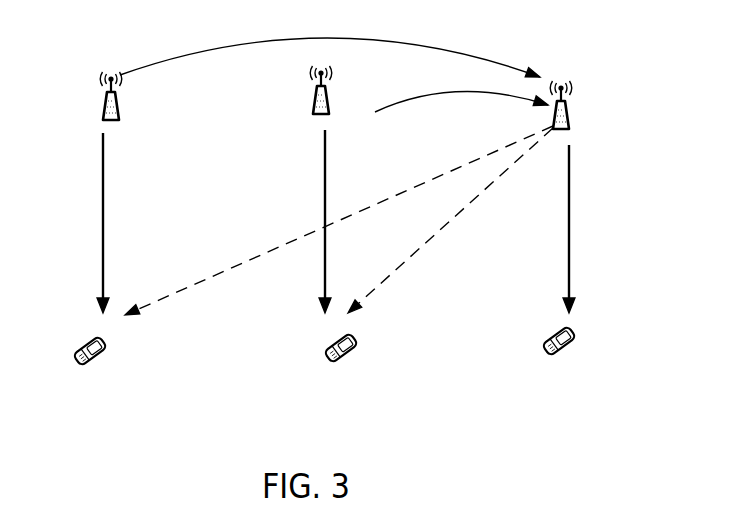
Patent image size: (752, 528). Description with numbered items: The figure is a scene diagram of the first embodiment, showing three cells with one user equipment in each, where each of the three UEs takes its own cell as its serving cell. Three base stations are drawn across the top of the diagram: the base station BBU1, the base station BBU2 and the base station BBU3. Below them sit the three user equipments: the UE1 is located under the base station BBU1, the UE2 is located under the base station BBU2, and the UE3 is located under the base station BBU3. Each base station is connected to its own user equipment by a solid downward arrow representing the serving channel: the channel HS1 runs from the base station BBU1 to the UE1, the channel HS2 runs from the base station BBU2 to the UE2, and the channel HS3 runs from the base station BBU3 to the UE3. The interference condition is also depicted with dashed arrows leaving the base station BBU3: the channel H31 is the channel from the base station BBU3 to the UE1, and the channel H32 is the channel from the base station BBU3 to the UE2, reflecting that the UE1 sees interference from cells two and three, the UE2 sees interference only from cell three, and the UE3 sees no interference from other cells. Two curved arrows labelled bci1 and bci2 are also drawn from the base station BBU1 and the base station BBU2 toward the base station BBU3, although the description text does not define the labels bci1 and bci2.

The base station BBU1 is at (137, 96).
The base station BBU2 is at (346, 90).
The base station BBU3 is at (589, 105).
The beam coordination information from BBU1 to BBU3 bci1 is at (330, 41).
The beam coordination information from BBU2 to BBU3 bci2 is at (461, 89).
The channel from the BBU1 to the UE1 HS1 is at (78, 223).
The channel from the BBU2 to the UE2 HS2 is at (338, 221).
The channel from the BBU3 to the UE3 HS3 is at (594, 229).
The channel from the BBU3 to the UE1 H31 is at (339, 220).
The channel from the BBU3 to the UE2 H32 is at (450, 220).
The UE UE1 is at (90, 365).
The UE UE2 is at (341, 362).
The UE UE3 is at (560, 358).